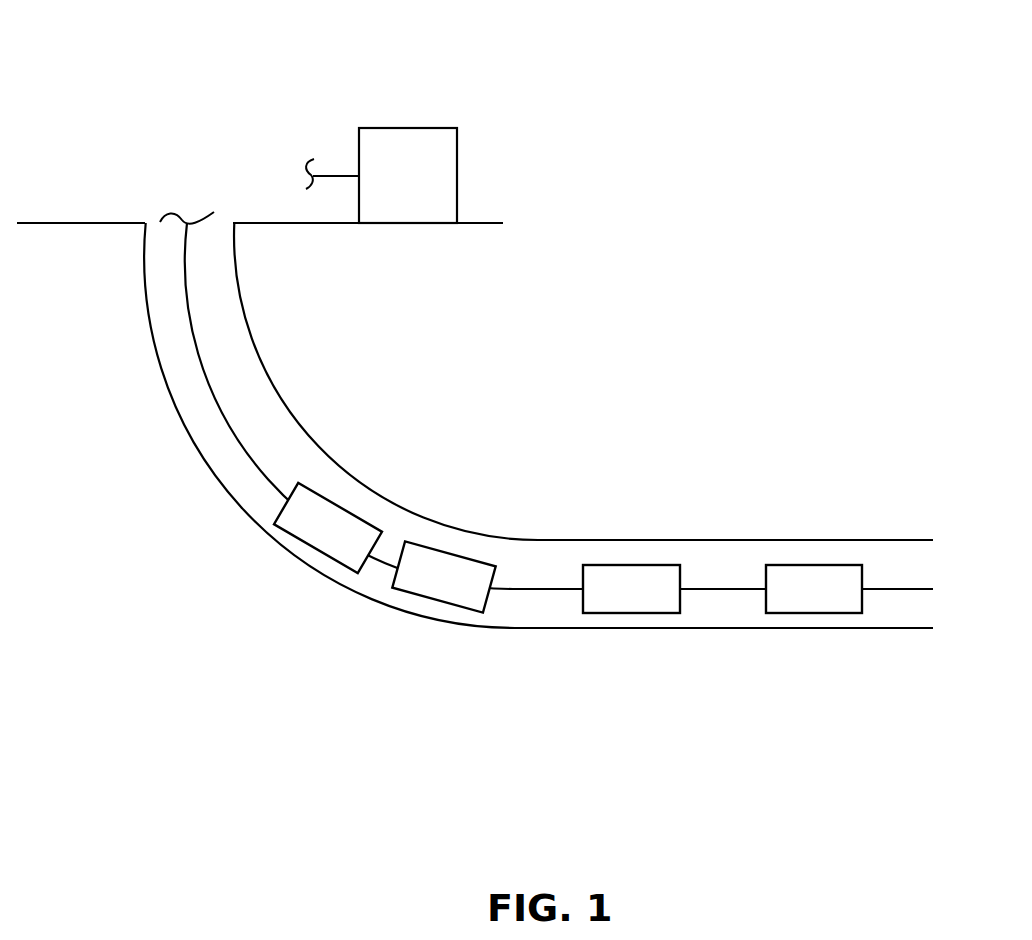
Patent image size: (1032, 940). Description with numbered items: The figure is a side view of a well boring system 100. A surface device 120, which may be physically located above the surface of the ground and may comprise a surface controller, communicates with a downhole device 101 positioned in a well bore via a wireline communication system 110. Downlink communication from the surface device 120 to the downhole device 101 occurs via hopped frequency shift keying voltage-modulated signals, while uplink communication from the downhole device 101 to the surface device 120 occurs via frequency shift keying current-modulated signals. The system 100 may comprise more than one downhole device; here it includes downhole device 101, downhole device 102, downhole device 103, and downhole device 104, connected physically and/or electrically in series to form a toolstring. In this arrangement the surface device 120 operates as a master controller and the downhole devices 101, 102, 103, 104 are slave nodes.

The well boring system 100 is at (160, 96).
The wireline communication system 110 is at (217, 385).
The surface device 120 is at (417, 148).
The downhole device 101 is at (317, 522).
The downhole device 102 is at (437, 575).
The downhole device 103 is at (630, 598).
The downhole device 104 is at (773, 603).